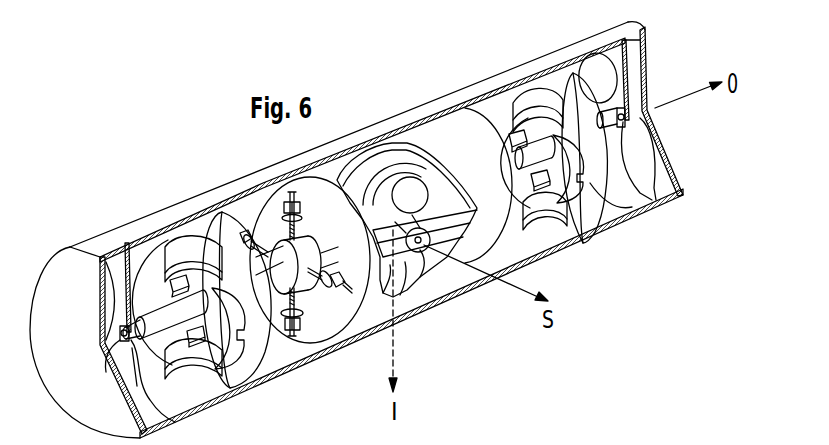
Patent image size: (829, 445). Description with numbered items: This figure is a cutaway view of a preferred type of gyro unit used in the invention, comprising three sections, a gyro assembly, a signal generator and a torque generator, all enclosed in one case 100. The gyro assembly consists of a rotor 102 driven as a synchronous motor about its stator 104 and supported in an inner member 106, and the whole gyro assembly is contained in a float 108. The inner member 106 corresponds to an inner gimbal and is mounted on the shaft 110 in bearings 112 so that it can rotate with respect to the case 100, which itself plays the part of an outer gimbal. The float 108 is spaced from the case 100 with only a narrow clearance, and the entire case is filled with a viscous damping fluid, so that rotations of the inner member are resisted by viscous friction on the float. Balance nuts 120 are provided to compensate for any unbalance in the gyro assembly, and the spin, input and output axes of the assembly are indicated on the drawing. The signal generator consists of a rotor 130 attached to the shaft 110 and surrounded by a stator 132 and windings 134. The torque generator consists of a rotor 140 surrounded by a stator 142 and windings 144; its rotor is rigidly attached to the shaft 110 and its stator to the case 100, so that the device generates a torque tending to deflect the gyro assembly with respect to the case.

The case 100 is at (53, 271).
The rotor 102 is at (390, 158).
The stator 104 is at (405, 188).
The inner member 106 is at (443, 222).
The float 108 is at (433, 294).
The shaft 110 is at (139, 362).
The bearings 112 is at (120, 337).
The balance nuts 120 is at (238, 236).
The rotor 130 is at (185, 336).
The stator 132 is at (263, 361).
The windings 134 is at (165, 252).
The rotor 140 is at (522, 192).
The stator 142 is at (589, 220).
The windings 144 is at (520, 108).